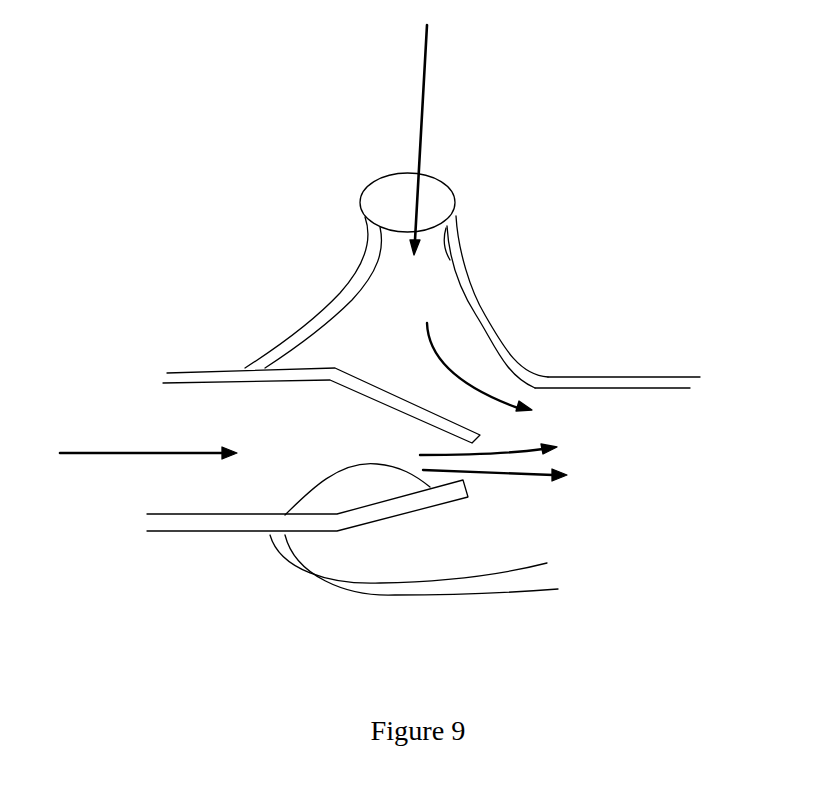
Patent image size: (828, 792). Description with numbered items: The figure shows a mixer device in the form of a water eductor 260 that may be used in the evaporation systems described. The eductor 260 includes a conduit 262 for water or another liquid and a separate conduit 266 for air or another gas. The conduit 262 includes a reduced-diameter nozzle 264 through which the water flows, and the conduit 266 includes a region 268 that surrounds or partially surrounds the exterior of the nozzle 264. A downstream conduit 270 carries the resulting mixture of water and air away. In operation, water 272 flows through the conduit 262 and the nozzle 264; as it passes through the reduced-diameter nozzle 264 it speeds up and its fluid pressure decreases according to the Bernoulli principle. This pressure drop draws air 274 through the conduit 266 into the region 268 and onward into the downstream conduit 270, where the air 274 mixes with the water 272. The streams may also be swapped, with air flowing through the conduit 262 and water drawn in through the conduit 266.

The water eductor 260 is at (255, 297).
The conduit 262 is at (212, 524).
The reduced-diameter nozzle 264 is at (285, 515).
The conduit 266 is at (453, 223).
The region 268 is at (480, 342).
The downstream conduit 270 is at (633, 388).
The water 272 is at (100, 452).
The air 274 is at (426, 88).